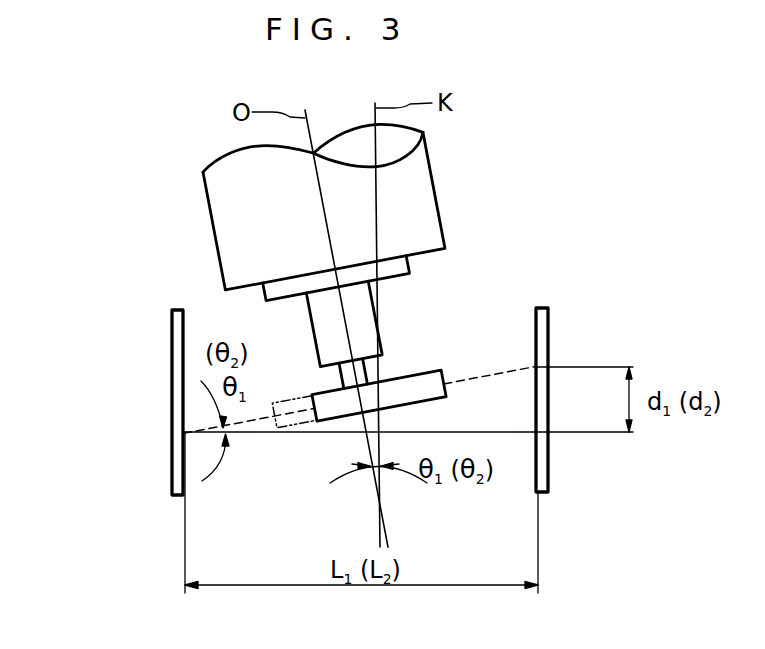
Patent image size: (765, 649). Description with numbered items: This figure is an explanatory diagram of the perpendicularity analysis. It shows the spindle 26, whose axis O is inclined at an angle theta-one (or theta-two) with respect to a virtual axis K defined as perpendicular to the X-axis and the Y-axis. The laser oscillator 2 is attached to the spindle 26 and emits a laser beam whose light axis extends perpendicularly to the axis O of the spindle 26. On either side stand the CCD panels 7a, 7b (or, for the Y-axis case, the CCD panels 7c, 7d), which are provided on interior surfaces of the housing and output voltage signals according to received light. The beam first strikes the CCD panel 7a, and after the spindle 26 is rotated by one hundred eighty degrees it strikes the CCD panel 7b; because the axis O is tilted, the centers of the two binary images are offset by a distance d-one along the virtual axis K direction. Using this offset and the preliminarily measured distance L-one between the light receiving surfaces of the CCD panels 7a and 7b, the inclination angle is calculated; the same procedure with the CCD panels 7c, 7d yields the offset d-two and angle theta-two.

The spindle 26 is at (427, 198).
The laser oscillator 2 is at (378, 322).
The CCD panel 7a is at (548, 320).
The CCD panel 7b is at (172, 324).
The CCD panel 7c is at (111, 402).
The CCD panel 7d is at (611, 400).